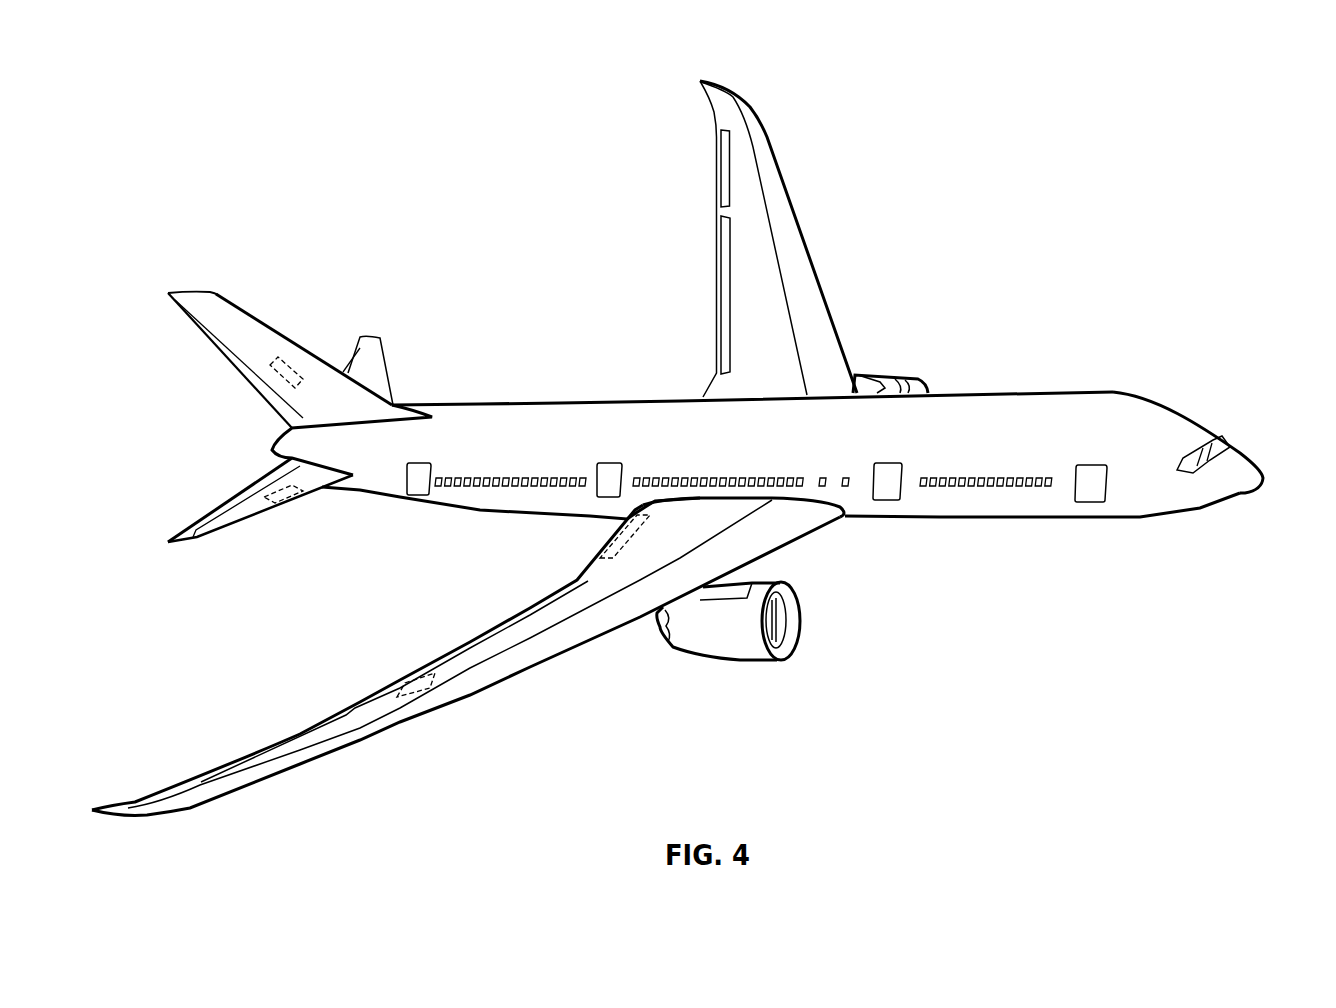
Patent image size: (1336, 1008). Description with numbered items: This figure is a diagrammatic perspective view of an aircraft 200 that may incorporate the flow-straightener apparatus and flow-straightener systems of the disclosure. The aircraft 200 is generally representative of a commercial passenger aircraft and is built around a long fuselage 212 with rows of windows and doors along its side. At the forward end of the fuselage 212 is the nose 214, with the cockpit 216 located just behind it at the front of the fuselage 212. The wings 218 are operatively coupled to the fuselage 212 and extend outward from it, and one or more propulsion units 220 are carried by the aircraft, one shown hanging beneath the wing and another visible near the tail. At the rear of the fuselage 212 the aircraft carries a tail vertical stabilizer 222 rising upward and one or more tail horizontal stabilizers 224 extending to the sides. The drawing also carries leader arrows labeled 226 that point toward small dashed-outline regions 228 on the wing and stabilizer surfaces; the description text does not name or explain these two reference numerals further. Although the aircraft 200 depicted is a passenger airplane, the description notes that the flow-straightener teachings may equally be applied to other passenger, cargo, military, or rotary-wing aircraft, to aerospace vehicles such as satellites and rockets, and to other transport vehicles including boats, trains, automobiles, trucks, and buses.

The aircraft 200 is at (696, 448).
The fuselage 212 is at (990, 405).
The nose 214 is at (1245, 483).
The cockpit 216 is at (1217, 437).
The wings 218 is at (767, 163).
The propulsion units 220 is at (906, 383).
The tail vertical stabilizer 222 is at (233, 323).
The tail horizontal stabilizers 224 is at (378, 368).
The leading edge region 226 is at (305, 362).
The sensor location 228 is at (284, 362).